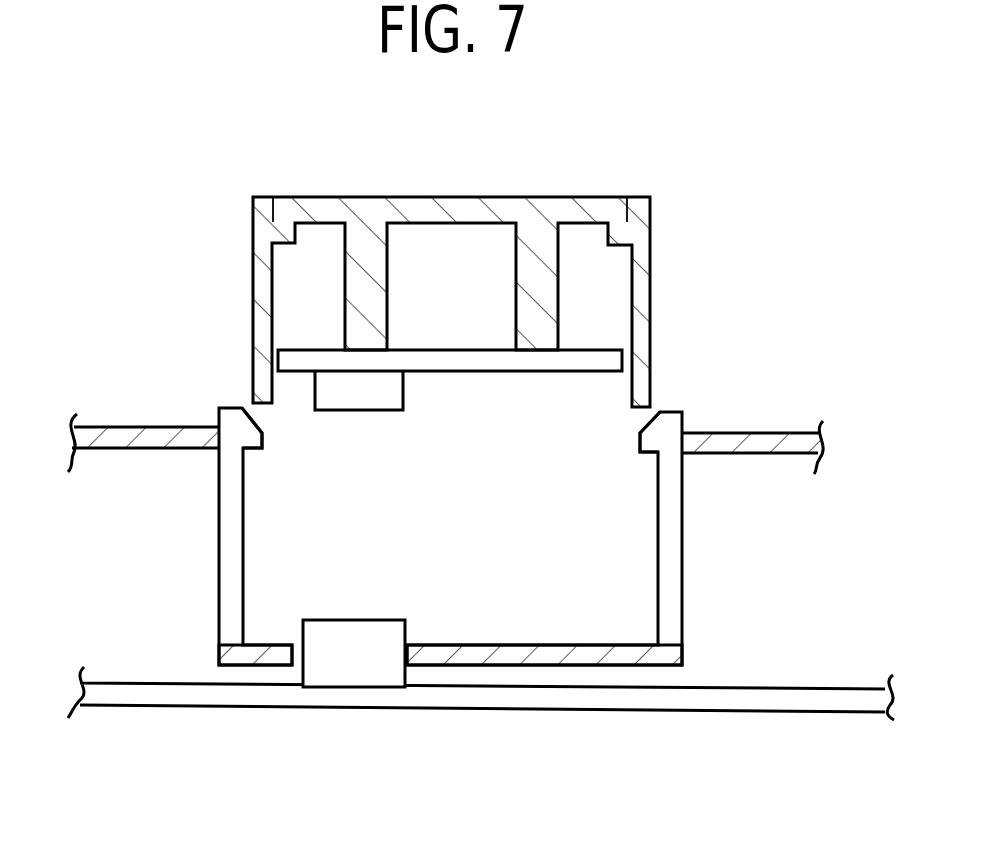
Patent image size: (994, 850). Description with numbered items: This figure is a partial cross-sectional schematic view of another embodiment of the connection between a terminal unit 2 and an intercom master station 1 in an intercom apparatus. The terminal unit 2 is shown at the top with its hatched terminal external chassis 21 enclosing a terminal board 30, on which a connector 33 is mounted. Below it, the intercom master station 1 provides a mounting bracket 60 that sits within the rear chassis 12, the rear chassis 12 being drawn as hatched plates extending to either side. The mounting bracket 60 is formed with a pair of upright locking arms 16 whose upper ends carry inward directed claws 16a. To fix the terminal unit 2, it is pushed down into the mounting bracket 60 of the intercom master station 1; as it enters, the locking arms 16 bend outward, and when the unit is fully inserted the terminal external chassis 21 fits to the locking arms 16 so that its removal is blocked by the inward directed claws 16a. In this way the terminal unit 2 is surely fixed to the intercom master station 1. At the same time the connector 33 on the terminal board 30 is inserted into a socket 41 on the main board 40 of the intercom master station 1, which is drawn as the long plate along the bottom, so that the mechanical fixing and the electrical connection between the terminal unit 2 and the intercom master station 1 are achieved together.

The intercom master station 1 is at (481, 515).
The terminal unit 2 is at (497, 278).
The terminal external chassis 21 is at (640, 265).
The terminal board 30 is at (515, 362).
The connector 33 is at (377, 410).
The rear chassis 12 is at (758, 435).
The locking arms 16 is at (232, 545).
The inward directed claws 16a is at (247, 439).
The mounting bracket 60 is at (273, 613).
The main board 40 is at (768, 703).
The socket 41 is at (362, 630).